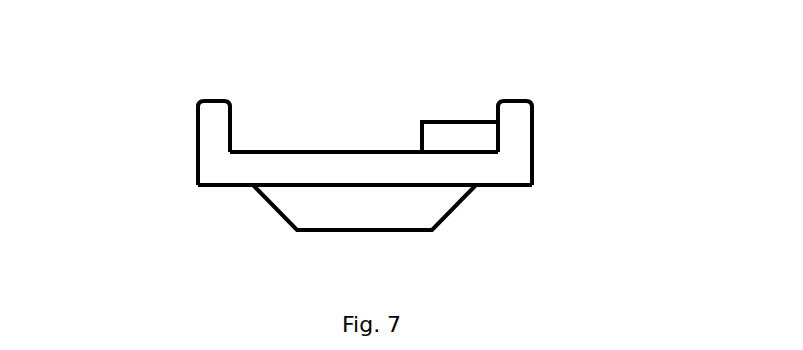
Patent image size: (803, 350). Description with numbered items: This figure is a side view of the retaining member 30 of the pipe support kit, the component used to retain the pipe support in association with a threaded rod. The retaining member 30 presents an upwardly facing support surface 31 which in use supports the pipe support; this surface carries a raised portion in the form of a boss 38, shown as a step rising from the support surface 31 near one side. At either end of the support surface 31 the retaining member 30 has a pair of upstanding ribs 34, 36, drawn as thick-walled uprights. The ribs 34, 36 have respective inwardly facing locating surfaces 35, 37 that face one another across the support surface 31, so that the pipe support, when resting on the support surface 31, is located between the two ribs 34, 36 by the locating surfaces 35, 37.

The retaining member 30 is at (388, 117).
The upwardly facing support surface 31 is at (310, 152).
The upstanding rib 34 is at (202, 118).
The inwardly facing locating surface 35 is at (233, 122).
The upstanding rib 36 is at (527, 105).
The inwardly facing locating surface 37 is at (497, 118).
The boss 38 is at (415, 123).